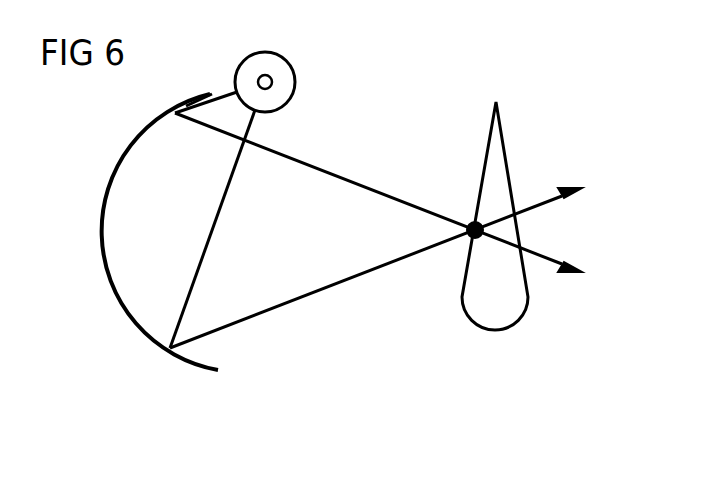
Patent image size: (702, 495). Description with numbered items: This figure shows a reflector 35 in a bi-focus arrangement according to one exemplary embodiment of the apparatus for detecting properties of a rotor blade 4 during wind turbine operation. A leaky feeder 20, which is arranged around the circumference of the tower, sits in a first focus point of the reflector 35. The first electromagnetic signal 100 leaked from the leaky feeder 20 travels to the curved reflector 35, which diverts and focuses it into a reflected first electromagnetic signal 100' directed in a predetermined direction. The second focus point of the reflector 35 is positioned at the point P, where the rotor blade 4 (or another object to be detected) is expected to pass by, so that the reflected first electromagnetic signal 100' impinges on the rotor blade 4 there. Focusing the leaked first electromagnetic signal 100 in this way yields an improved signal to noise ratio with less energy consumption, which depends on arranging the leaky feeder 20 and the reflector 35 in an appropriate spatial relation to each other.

The leaky feeder 20 is at (295, 80).
The reflector 35 is at (108, 219).
The first electromagnetic signal 100 is at (227, 192).
The reflected first electromagnetic signal 100' is at (376, 234).
The point on rotor blade P is at (470, 224).
The rotor blade 4 is at (494, 332).